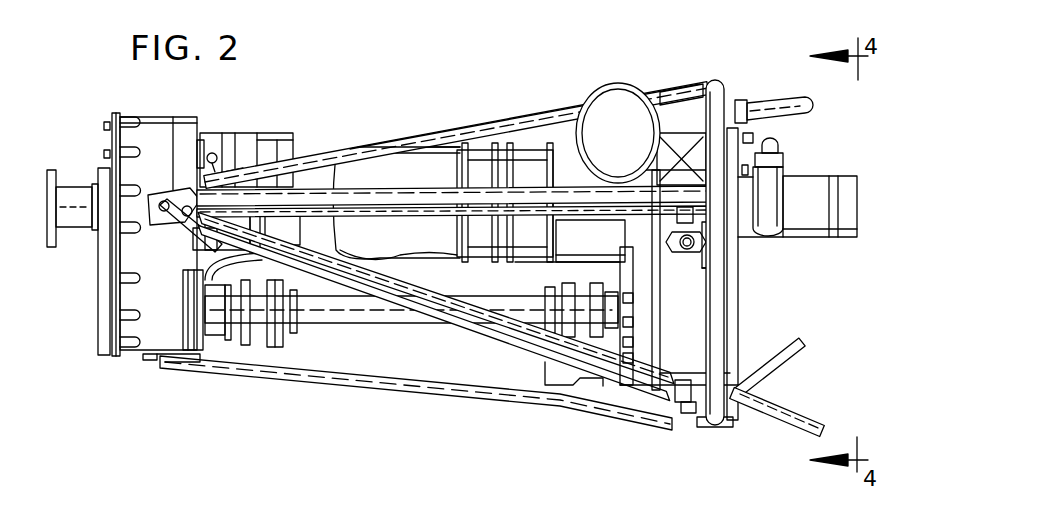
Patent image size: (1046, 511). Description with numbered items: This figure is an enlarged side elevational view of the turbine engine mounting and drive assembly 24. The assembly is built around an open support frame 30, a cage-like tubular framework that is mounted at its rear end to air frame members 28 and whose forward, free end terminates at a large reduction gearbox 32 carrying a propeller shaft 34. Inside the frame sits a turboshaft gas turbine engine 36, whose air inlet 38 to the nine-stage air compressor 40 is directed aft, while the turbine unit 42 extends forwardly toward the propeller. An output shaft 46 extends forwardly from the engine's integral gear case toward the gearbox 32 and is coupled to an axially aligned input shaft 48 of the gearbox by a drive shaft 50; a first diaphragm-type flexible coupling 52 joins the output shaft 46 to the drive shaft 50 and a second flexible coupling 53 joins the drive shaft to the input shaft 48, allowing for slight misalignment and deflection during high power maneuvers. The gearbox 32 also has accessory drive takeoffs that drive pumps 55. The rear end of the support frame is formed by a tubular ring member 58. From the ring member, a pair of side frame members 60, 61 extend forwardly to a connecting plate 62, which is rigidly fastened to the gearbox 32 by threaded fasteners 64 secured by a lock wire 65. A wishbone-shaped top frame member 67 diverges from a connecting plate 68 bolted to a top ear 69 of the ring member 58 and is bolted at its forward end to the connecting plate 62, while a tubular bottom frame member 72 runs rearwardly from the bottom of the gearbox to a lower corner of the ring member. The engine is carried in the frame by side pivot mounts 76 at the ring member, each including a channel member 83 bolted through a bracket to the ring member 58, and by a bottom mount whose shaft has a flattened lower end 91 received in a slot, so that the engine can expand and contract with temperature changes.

The drive assembly 24 is at (493, 108).
The air frame members 28 is at (765, 90).
The support frame 30 is at (324, 146).
The gearbox 32 is at (170, 116).
The propeller shaft 34 is at (73, 185).
The turboshaft gas turbine engine 36 is at (436, 170).
The air inlet 38 is at (852, 183).
The air compressor 40 is at (779, 175).
The turbine unit 42 is at (528, 160).
The output shaft 46 is at (619, 309).
The input shaft 48 is at (232, 336).
The drive shaft 50 is at (352, 318).
The first flexible coupling 52 is at (541, 336).
The second flexible coupling 53 is at (275, 348).
The pumps 55 is at (290, 188).
The tubular ring member 58 is at (717, 81).
The side frame member 60 is at (412, 233).
The side frame member 61 is at (490, 336).
The connecting plate 62 is at (196, 172).
The threaded fasteners 64 is at (165, 212).
The lock wire 65 is at (170, 195).
The top frame member 67 is at (480, 127).
The connecting plate 68 is at (690, 93).
The top ear 69 is at (707, 90).
The bottom frame member 72 is at (364, 383).
The pivot mount 76 is at (655, 315).
The channel member 83 is at (686, 251).
The flattened lower end 91 is at (683, 416).